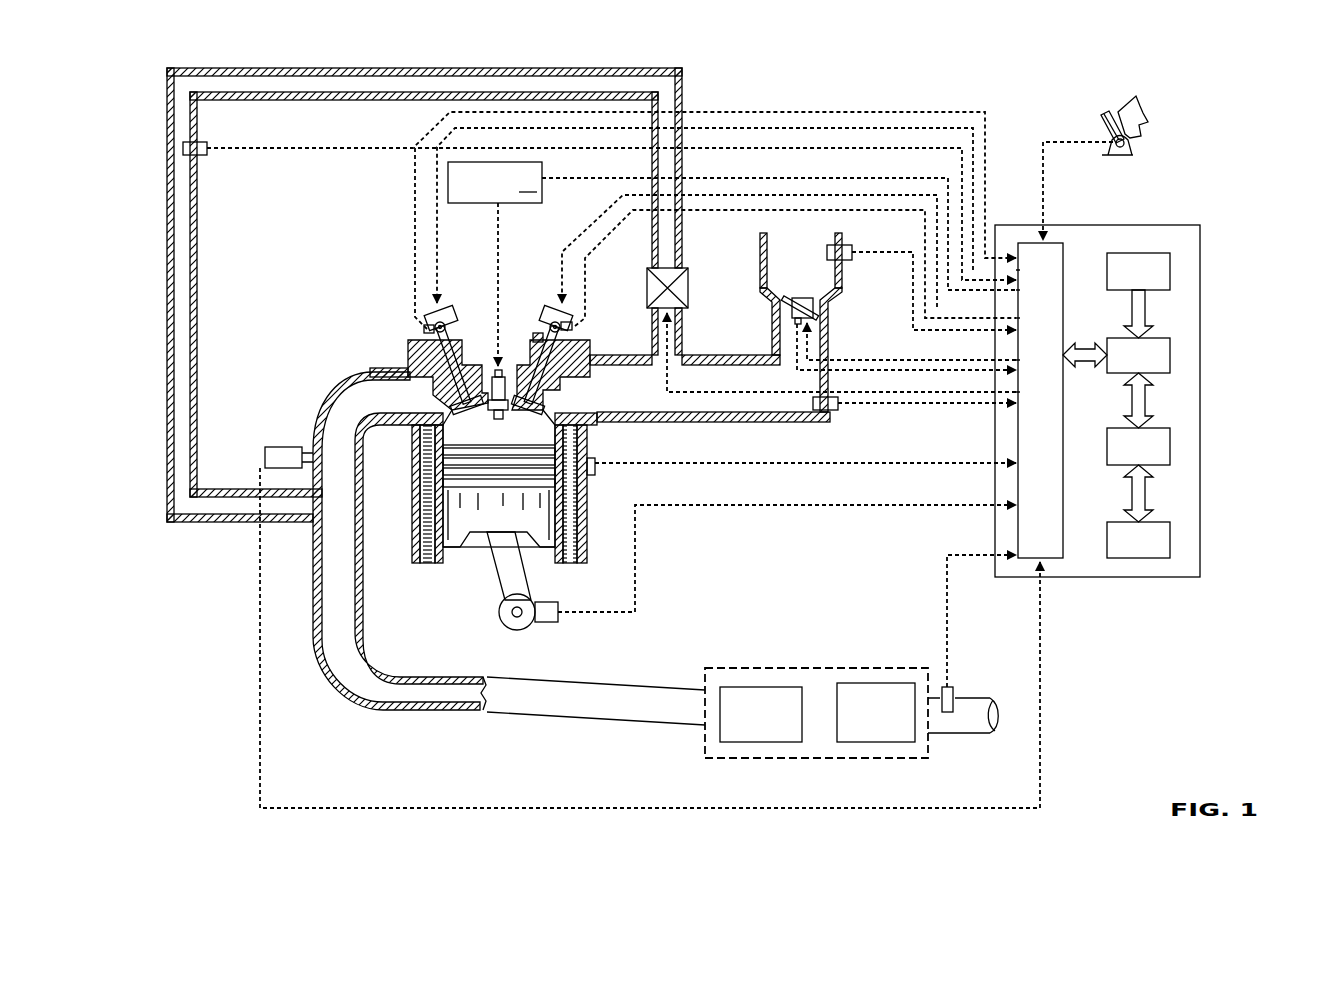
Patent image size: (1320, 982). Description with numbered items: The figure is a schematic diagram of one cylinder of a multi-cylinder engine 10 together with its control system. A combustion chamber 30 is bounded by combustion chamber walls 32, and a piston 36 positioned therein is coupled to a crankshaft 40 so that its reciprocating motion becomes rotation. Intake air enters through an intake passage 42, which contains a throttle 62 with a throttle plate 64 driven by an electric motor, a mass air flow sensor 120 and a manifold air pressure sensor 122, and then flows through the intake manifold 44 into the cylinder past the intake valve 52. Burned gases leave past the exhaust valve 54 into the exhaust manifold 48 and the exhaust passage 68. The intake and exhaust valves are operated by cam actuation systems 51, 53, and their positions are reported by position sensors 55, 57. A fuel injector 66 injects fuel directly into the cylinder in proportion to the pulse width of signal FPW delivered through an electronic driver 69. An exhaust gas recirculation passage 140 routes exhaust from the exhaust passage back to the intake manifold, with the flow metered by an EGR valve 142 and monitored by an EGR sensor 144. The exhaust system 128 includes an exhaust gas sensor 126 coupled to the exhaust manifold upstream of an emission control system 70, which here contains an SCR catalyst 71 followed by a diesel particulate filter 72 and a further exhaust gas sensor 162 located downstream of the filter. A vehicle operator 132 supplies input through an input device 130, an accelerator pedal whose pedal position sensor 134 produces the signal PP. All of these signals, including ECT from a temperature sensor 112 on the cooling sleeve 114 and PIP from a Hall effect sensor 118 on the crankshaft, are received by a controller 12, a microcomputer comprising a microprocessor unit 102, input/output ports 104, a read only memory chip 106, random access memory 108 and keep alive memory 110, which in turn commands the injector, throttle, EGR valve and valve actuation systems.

The engine 10 is at (348, 296).
The controller 12 is at (1132, 388).
The combustion chamber 30 is at (468, 450).
The combustion chamber walls 32 is at (448, 558).
The piston 36 is at (484, 535).
The crankshaft 40 is at (508, 628).
The intake passage 42 is at (808, 274).
The intake manifold 44 is at (657, 404).
The exhaust manifold 48 is at (385, 404).
The cam actuation system 51 is at (548, 312).
The intake valve 52 is at (548, 398).
The cam actuation system 53 is at (445, 308).
The exhaust valve 54 is at (452, 400).
The position sensor 55 is at (568, 326).
The position sensor 57 is at (430, 328).
The throttle 62 is at (818, 315).
The throttle plate 64 is at (790, 310).
The fuel injector 66 is at (500, 362).
The exhaust passage 68 is at (520, 715).
The electronic driver 69 is at (580, 180).
The emission control system 70 is at (845, 734).
The SCR catalyst 71 is at (771, 722).
The diesel particulate filter 72 is at (886, 721).
The microprocessor unit 102 is at (1170, 358).
The input/output ports 104 is at (1064, 250).
The read only memory chip 106 is at (1170, 270).
The random access memory 108 is at (1170, 448).
The keep alive memory 110 is at (1170, 545).
The temperature sensor 112 is at (597, 458).
The cooling sleeve 114 is at (568, 520).
The Hall effect sensor 118 is at (545, 623).
The mass air flow sensor 120 is at (845, 245).
The manifold air pressure sensor 122 is at (838, 410).
The exhaust gas sensor 126 is at (262, 452).
The exhaust system 128 is at (343, 708).
The input device 130 is at (1103, 120).
The vehicle operator 132 is at (1150, 110).
The pedal position sensor 134 is at (1130, 146).
The EGR passage 140 is at (423, 68).
The EGR valve 142 is at (717, 278).
The EGR sensor 144 is at (203, 157).
The exhaust gas sensor 162 is at (950, 686).